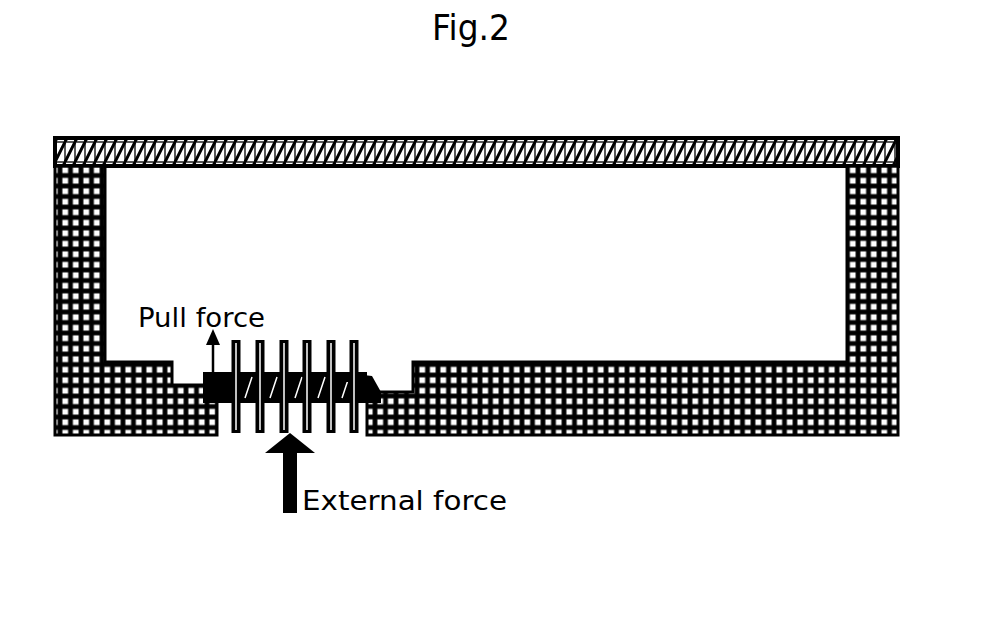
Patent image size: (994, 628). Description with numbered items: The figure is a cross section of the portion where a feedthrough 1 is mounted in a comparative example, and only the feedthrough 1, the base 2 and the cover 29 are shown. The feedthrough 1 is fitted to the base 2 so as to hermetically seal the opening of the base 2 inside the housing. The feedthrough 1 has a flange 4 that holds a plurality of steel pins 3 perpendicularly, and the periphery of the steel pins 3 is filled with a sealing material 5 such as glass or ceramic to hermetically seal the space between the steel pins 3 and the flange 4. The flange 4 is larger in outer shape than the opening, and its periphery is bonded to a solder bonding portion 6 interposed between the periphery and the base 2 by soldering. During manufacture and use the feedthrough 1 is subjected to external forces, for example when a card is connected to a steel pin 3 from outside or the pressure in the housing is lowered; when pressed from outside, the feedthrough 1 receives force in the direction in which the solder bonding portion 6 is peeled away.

The feedthrough 1 is at (343, 444).
The base 2 is at (478, 390).
The steel pin 3 is at (284, 372).
The flange 4 is at (226, 405).
The sealing material 5 is at (350, 372).
The solder bonding portion 6 is at (379, 385).
The cover 29 is at (580, 138).